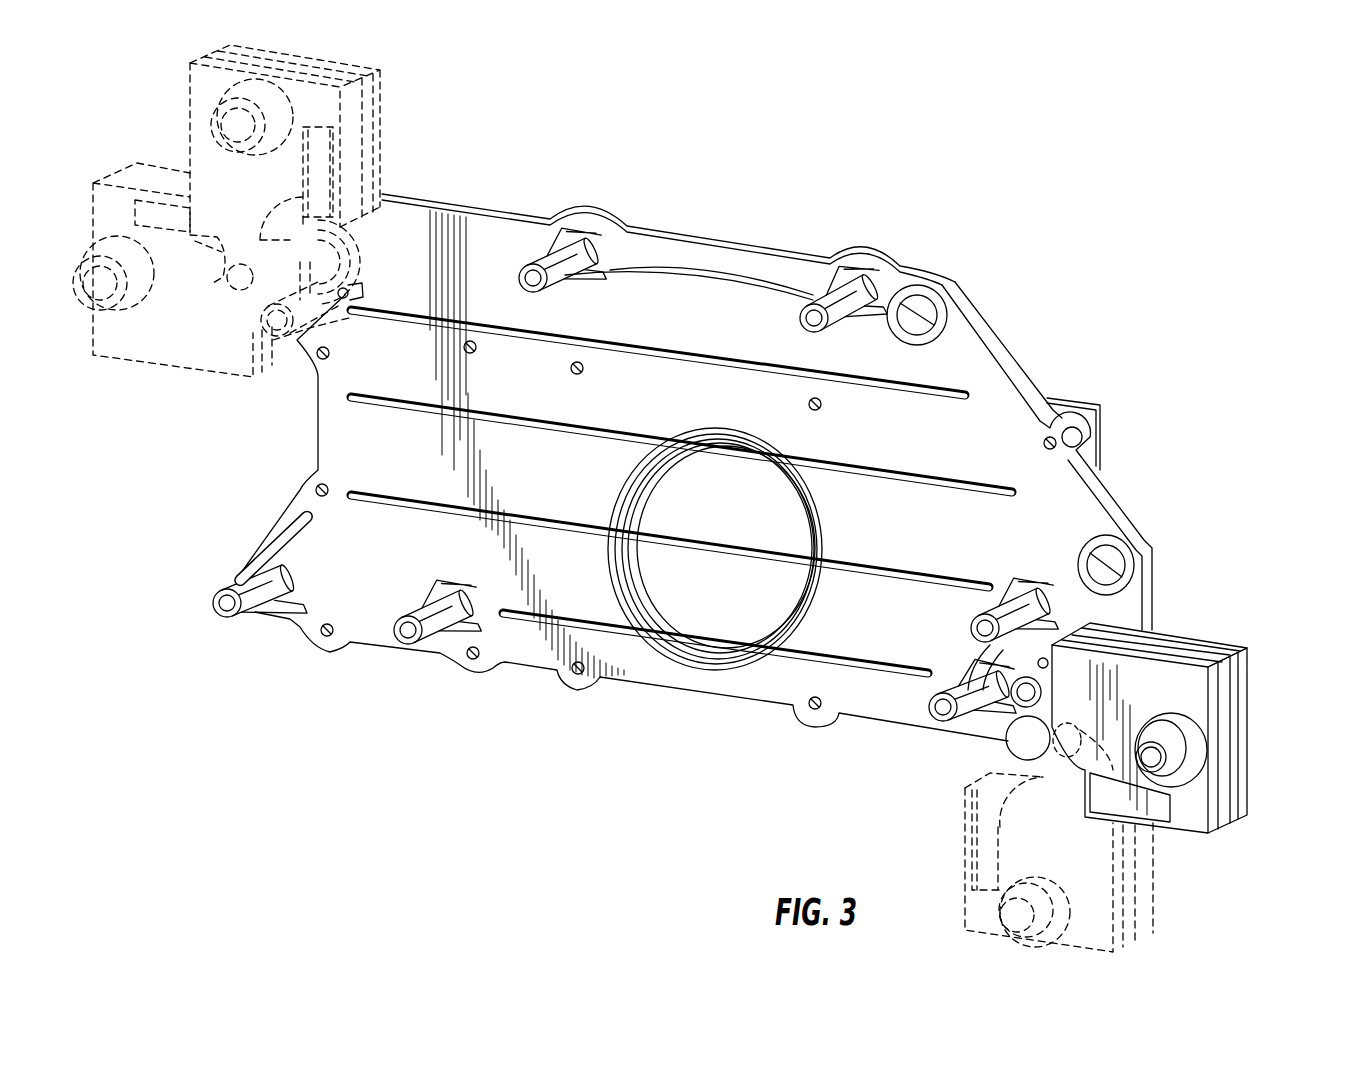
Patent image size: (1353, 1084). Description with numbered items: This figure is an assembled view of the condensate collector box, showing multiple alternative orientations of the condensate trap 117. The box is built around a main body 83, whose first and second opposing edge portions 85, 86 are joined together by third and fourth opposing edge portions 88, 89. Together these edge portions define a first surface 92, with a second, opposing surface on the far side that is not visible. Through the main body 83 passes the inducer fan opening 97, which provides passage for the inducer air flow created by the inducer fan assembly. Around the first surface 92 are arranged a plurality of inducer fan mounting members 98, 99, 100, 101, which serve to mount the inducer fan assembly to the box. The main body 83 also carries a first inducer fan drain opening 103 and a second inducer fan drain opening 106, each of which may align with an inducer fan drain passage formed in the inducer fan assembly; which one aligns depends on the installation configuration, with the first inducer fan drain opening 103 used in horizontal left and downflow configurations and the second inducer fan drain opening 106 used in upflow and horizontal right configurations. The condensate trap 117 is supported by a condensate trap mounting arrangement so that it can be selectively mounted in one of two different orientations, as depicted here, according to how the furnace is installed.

The main body 83 is at (718, 237).
The first edge portion 85 is at (445, 197).
The second edge portion 86 is at (692, 690).
The third edge portion 88 is at (318, 422).
The fourth edge portion 89 is at (1147, 583).
The first surface 92 is at (721, 444).
The inducer fan opening 97 is at (635, 505).
The inducer fan mounting member 98 is at (223, 585).
The inducer fan mounting member 99 is at (428, 619).
The inducer fan mounting member 100 is at (611, 274).
The inducer fan mounting member 101 is at (980, 661).
The first inducer fan drain opening 103 is at (910, 305).
The second inducer fan drain opening 106 is at (1110, 565).
The condensate trap 117 is at (1264, 748).